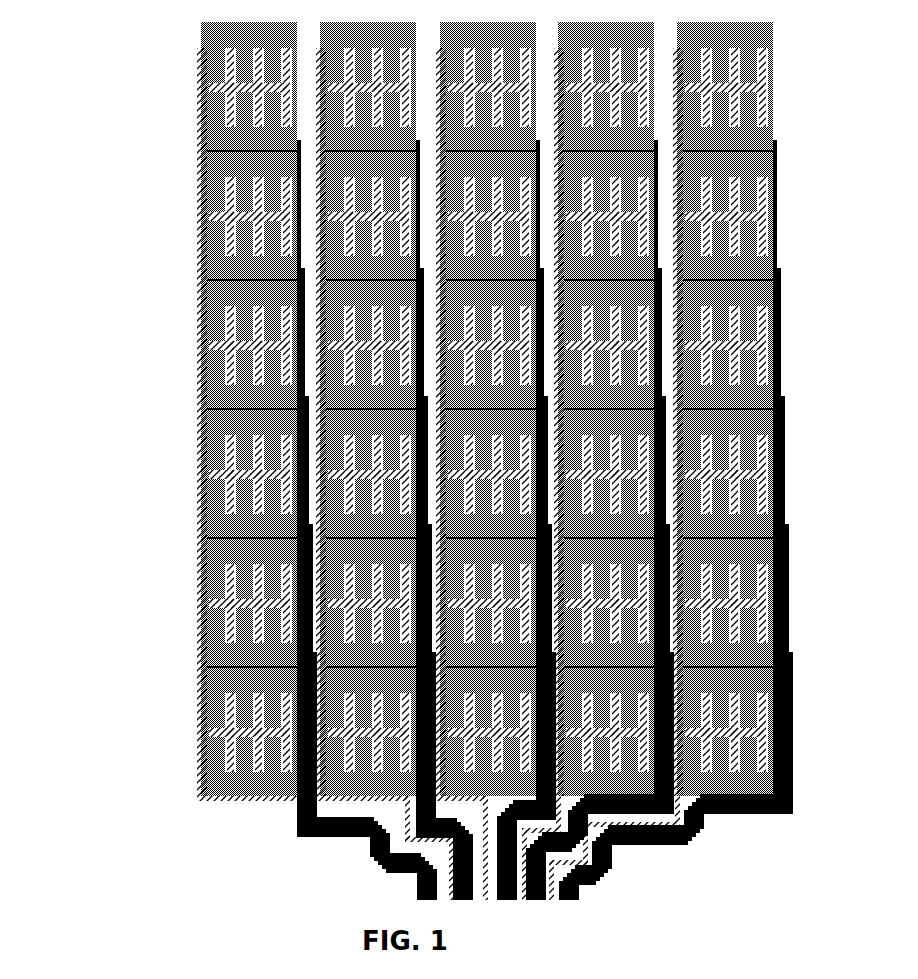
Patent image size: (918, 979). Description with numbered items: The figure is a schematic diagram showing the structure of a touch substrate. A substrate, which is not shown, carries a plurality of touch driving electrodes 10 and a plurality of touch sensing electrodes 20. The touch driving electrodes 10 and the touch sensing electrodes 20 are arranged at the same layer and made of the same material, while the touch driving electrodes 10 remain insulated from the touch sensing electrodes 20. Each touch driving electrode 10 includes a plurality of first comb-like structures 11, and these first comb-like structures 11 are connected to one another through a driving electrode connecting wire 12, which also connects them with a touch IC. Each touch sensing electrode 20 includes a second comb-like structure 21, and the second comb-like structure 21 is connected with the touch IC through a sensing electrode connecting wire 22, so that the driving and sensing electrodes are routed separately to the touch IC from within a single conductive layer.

The touch driving electrode 10 is at (401, 461).
The first comb-like structure 11 is at (220, 348).
The driving electrode connecting wire 12 is at (207, 298).
The touch sensing electrode 20 is at (410, 474).
The second comb-like structure 21 is at (224, 118).
The sensing electrode connecting wire 22 is at (301, 163).